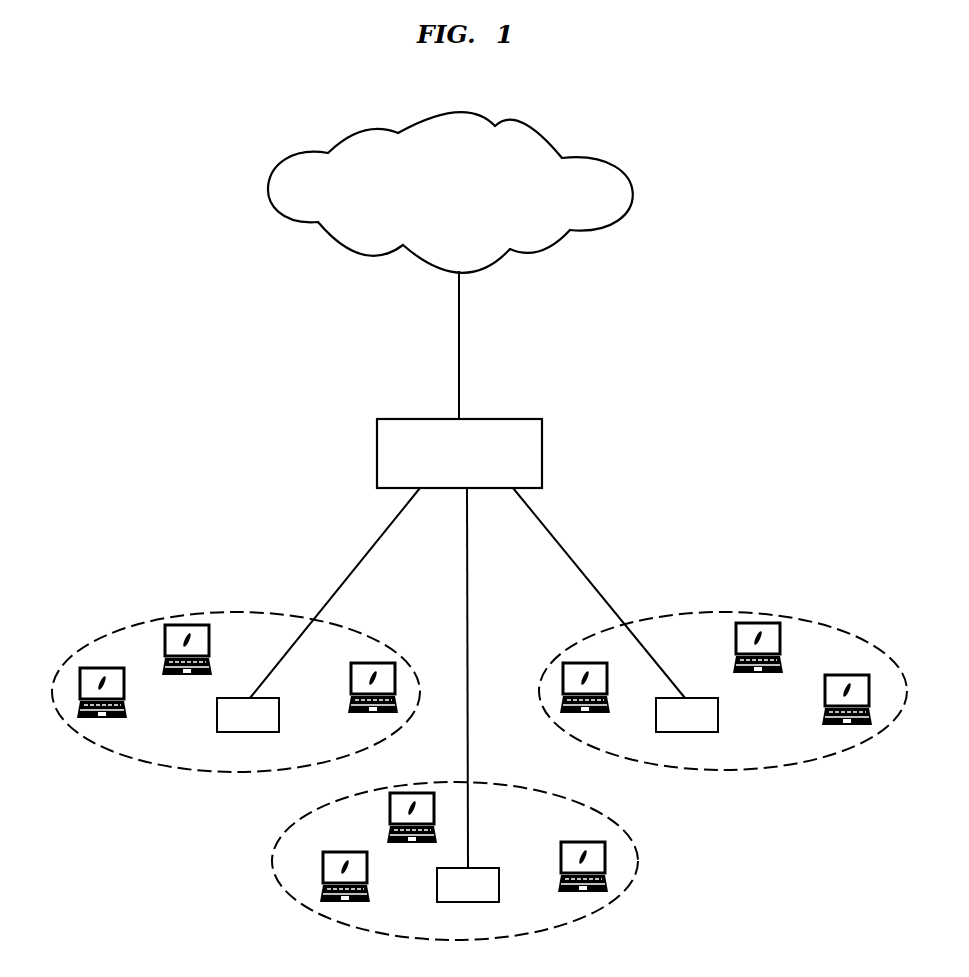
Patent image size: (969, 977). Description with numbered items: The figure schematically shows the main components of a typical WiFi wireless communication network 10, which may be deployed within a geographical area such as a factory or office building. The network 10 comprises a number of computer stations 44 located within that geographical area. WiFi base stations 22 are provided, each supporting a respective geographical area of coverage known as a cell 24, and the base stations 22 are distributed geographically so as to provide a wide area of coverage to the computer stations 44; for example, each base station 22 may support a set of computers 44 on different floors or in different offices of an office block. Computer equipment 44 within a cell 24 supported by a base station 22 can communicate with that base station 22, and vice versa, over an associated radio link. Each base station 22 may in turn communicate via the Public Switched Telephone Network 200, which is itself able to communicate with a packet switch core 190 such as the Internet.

The wireless communication network 10 is at (728, 325).
The packet switch core 190 is at (560, 143).
The Public Switched Telephone Network 200 is at (542, 419).
The WiFi base station 22 is at (467, 800).
The cell 24 is at (320, 754).
The computer station 44 is at (205, 628).